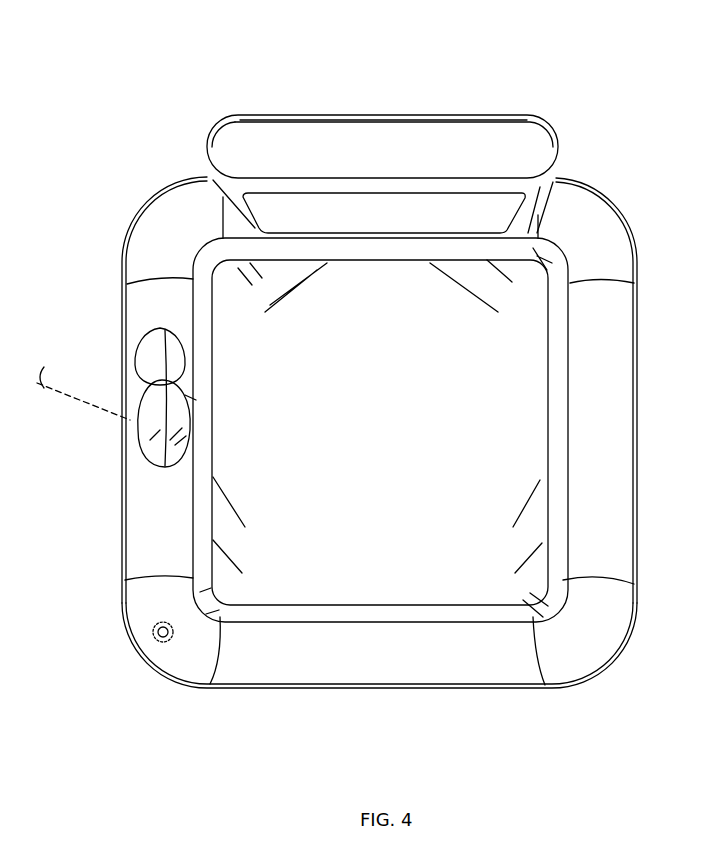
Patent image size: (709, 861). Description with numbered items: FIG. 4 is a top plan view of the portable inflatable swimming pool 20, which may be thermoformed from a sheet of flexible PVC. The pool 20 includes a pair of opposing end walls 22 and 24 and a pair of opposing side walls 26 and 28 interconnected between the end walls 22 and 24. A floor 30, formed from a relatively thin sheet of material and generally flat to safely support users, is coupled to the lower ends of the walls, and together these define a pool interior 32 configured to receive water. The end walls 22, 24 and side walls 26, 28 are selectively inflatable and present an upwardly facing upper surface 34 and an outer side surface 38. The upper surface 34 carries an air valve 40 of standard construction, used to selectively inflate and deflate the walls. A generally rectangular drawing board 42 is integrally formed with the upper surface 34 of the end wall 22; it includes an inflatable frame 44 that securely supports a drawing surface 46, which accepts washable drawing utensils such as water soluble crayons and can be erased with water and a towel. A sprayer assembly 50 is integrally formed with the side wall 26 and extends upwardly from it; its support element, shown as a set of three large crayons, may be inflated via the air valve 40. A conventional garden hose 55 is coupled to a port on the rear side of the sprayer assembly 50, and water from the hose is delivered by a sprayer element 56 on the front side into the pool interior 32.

The portable inflatable swimming pool 20 is at (353, 401).
The end wall 22 is at (540, 232).
The end wall 24 is at (262, 688).
The side wall 26 is at (140, 542).
The side wall 28 is at (615, 558).
The floor 30 is at (397, 447).
The pool interior 32 is at (391, 260).
The upper surface 34 is at (500, 665).
The outer side surface 38 is at (413, 687).
The air valve 40 is at (160, 634).
The drawing board 42 is at (208, 144).
The frame 44 is at (393, 140).
The drawing surface 46 is at (389, 216).
The sprayer assembly 50 is at (150, 338).
The garden hose 55 is at (88, 396).
The sprayer element 56 is at (195, 408).